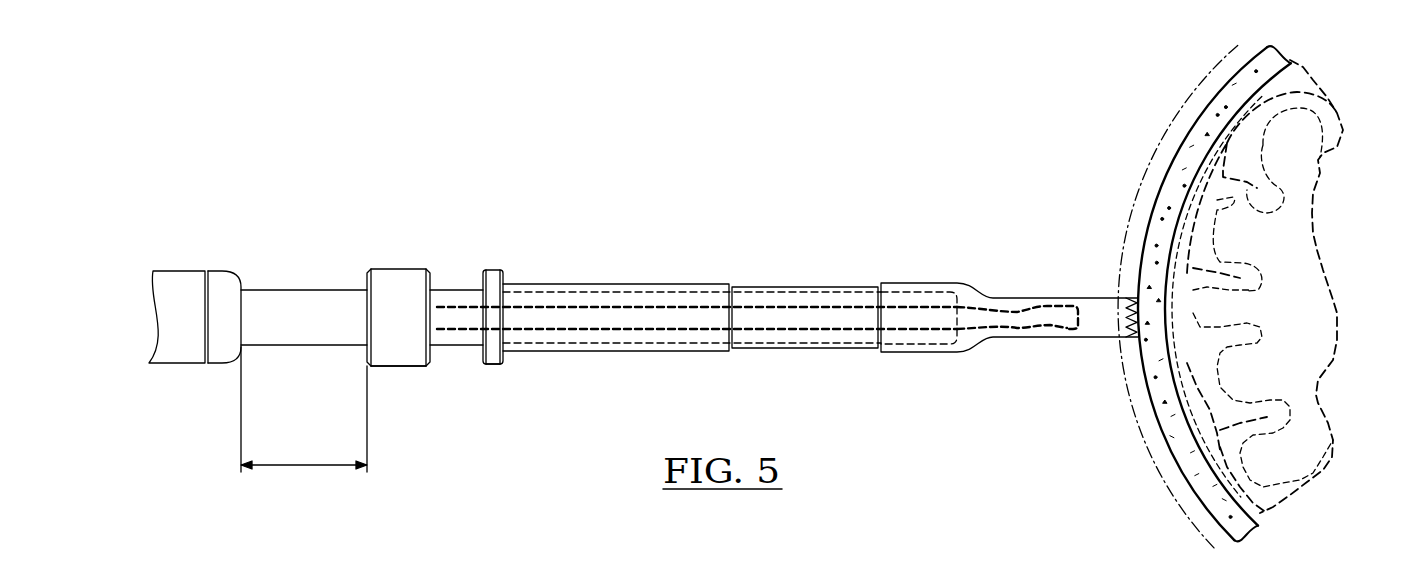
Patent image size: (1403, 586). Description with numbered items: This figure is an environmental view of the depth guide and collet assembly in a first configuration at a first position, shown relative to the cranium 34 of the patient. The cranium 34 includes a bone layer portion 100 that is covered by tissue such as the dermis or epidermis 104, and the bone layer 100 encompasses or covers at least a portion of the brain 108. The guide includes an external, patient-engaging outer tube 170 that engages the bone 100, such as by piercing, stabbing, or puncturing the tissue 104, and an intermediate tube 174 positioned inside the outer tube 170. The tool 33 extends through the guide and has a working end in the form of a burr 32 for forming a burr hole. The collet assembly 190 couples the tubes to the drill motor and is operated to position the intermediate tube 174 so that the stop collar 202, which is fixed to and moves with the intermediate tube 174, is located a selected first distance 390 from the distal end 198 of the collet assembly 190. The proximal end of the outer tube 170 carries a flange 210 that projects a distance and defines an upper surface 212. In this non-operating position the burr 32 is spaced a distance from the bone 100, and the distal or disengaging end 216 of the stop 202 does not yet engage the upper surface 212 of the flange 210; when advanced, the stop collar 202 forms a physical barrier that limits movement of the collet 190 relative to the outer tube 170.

The burr 32 is at (1061, 297).
The tool 33 is at (846, 316).
The cranium 34 is at (1135, 76).
The bone layer portion 100 is at (1185, 161).
The dermis or epidermis 104 is at (1177, 124).
The brain 108 is at (1258, 271).
The outer tube 170 is at (661, 283).
The intermediate tube 174 is at (320, 284).
The collet assembly 190 is at (188, 254).
The distal end of the collet 198 is at (246, 289).
The stop collar 202 is at (394, 262).
The flange 210 is at (494, 367).
The upper surface of the flange 212 is at (482, 280).
The distal end of the stop 216 is at (434, 354).
The first distance 390 is at (367, 465).